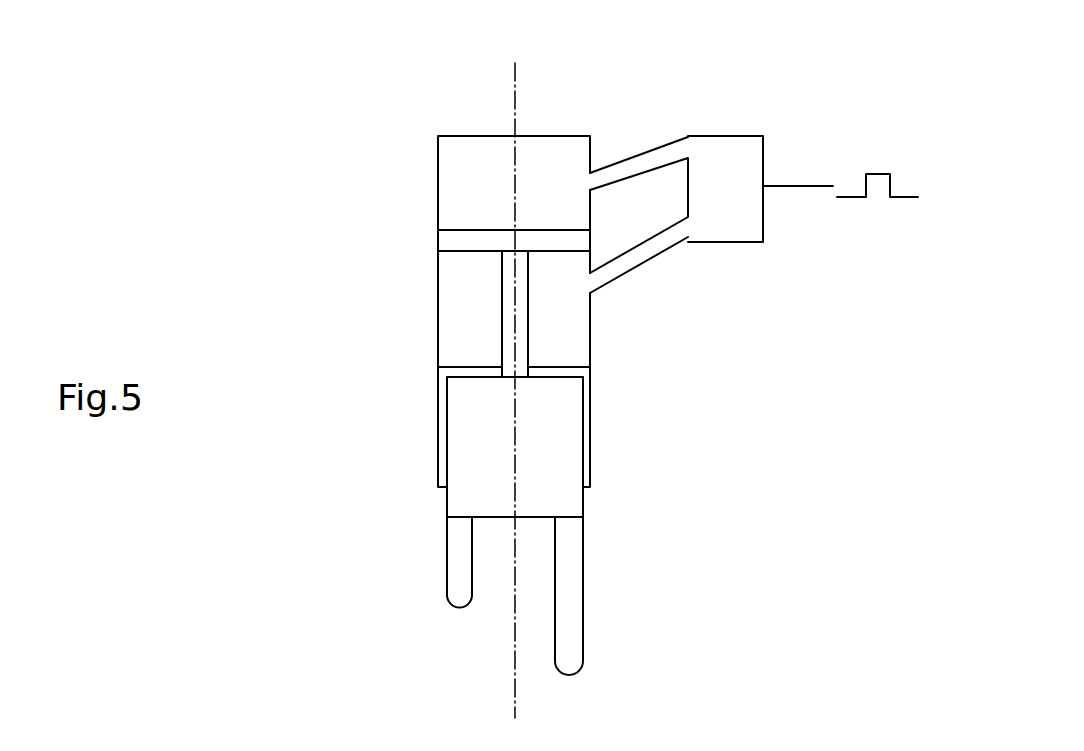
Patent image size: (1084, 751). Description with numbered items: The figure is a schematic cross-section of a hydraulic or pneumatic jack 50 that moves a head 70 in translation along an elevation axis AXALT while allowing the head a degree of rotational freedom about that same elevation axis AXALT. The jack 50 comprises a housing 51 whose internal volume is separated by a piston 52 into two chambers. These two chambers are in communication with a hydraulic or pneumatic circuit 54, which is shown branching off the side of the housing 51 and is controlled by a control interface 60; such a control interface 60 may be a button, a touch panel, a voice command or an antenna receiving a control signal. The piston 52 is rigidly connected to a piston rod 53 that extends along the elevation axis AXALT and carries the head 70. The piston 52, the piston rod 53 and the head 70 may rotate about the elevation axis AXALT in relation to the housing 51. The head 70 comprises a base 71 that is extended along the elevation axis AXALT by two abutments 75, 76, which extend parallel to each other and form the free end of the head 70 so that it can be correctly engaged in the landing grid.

The elevation axis AXALT is at (513, 92).
The jack 50 is at (571, 264).
The housing 51 is at (438, 162).
The piston 52 is at (556, 240).
The piston rod 53 is at (502, 298).
The hydraulic or pneumatic circuit 54 is at (722, 267).
The control interface 60 is at (890, 174).
The head 70 is at (480, 532).
The base 71 is at (563, 447).
The abutment 75 is at (447, 572).
The abutment 76 is at (583, 575).